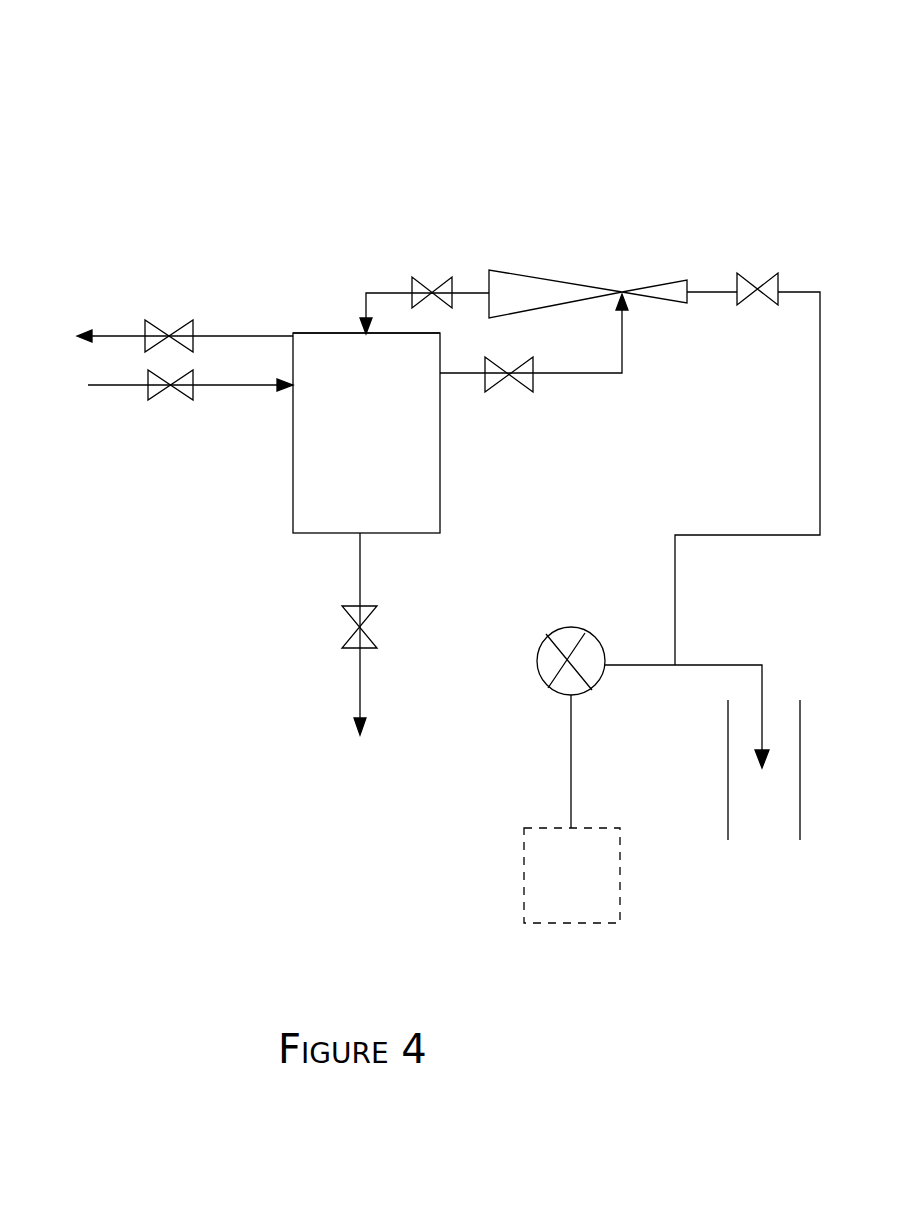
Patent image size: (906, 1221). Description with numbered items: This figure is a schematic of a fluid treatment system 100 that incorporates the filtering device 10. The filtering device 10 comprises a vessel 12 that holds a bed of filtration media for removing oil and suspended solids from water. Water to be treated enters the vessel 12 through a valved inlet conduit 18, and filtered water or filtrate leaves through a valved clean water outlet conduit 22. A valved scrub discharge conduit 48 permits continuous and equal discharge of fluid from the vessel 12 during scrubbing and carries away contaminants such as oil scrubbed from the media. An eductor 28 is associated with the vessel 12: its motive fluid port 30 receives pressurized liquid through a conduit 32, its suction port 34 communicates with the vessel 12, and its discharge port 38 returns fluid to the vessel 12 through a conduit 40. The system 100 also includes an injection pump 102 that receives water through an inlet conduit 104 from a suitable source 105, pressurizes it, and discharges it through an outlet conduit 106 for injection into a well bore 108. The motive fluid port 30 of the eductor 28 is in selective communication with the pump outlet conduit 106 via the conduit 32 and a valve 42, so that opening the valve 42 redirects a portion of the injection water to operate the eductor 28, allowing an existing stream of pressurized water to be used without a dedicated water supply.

The fluid treatment system 100 is at (632, 126).
The filtering device 10 is at (282, 270).
The vessel 12 is at (303, 470).
The scrub discharge conduit 48 is at (116, 336).
The inlet conduit 18 is at (116, 385).
The clean water outlet conduit 22 is at (360, 677).
The conduit 40 is at (381, 290).
The eductor 28 is at (545, 258).
The discharge port 38 is at (485, 292).
The suction port 34 is at (622, 290).
The motive fluid port 30 is at (695, 286).
The valve 42 is at (766, 276).
The conduit 32 is at (811, 286).
The outlet conduit 106 is at (642, 662).
The injection pump 102 is at (560, 629).
The inlet conduit 104 is at (571, 740).
The source 105 is at (541, 862).
The well bore 108 is at (728, 742).